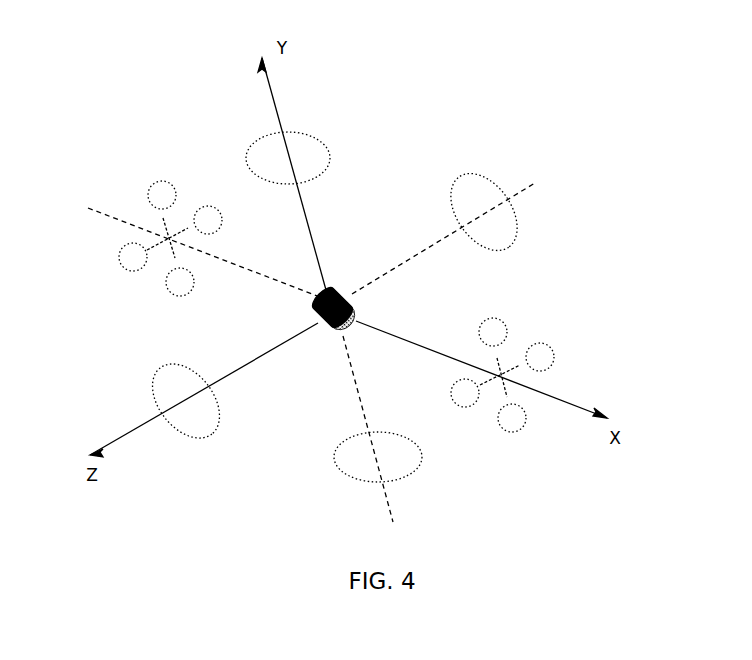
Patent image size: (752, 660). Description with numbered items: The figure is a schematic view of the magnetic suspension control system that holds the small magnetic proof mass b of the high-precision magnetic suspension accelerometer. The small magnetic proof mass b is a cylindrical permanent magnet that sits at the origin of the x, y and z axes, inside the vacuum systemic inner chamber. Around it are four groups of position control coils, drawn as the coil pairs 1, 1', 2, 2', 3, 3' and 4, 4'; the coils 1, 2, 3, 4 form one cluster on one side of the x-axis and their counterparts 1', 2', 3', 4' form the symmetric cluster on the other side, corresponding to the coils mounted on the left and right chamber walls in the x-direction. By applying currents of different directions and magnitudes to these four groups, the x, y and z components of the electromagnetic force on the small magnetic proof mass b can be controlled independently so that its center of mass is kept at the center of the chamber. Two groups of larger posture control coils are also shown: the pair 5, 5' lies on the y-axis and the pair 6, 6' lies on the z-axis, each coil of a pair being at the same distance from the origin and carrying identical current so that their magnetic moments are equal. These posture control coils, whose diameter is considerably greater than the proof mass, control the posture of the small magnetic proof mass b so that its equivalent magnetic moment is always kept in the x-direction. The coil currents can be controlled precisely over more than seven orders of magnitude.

The position control coil 1 is at (158, 186).
The position control coil 2 is at (122, 258).
The position control coil 3 is at (180, 293).
The position control coil 4 is at (216, 220).
The posture control coil 5 is at (288, 146).
The posture control coil 6 is at (484, 210).
The position control coil 1' is at (490, 323).
The position control coil 2' is at (453, 395).
The position control coil 3' is at (514, 431).
The position control coil 4' is at (553, 361).
The posture control coil 5' is at (378, 468).
The posture control coil 6' is at (178, 400).
The small magnetic proof mass b is at (334, 301).